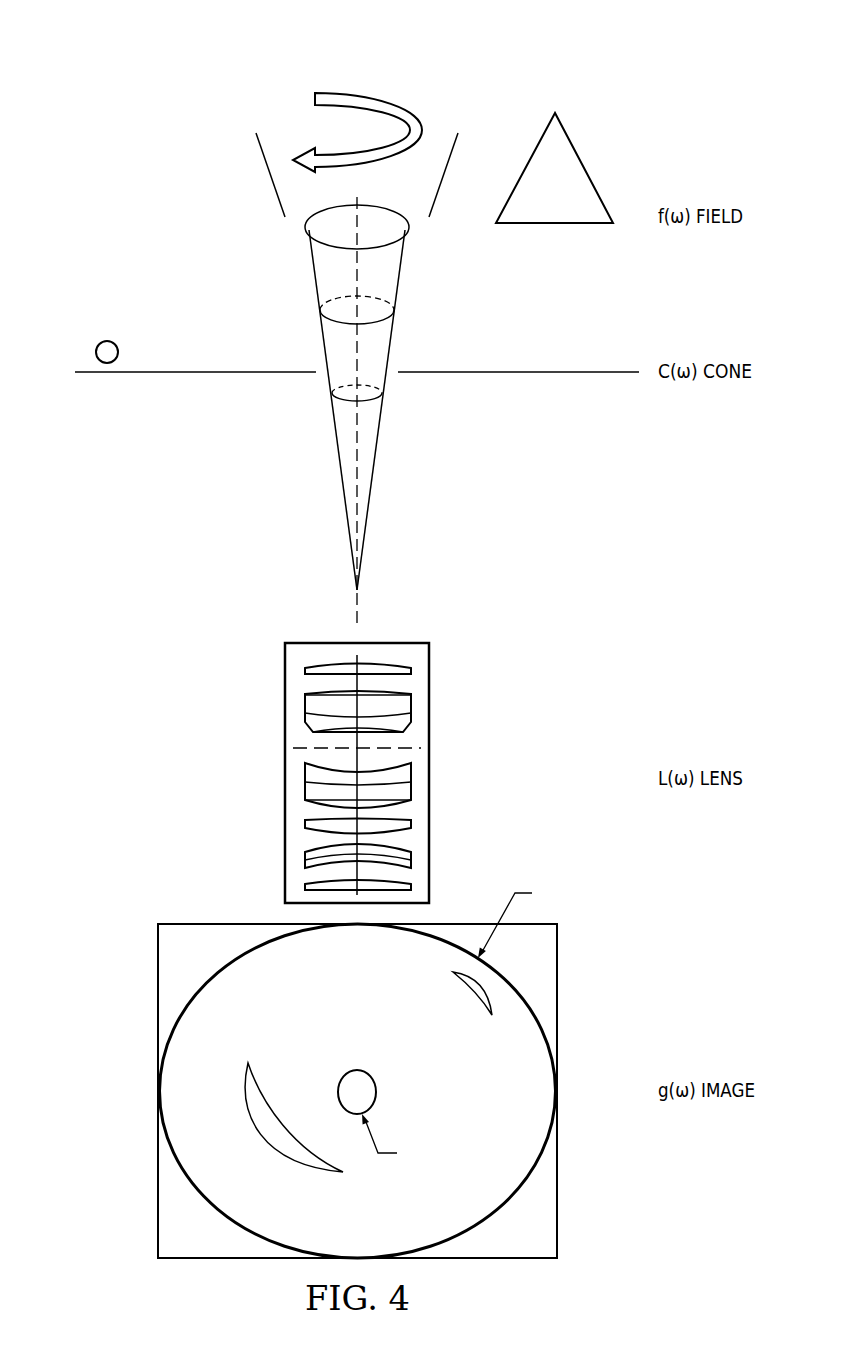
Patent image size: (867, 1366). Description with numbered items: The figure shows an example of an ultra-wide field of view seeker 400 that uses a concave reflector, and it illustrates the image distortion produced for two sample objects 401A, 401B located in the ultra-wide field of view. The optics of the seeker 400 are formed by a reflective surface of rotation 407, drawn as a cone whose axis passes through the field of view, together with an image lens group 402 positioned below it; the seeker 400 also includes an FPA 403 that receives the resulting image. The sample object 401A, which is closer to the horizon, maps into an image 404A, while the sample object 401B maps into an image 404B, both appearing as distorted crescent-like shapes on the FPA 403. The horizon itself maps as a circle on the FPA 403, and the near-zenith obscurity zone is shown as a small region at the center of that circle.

The ultra-wide field of view seeker 400 is at (170, 60).
The sample object 401A is at (96, 346).
The sample object 401B is at (588, 168).
The reflective surface of rotation 407 is at (302, 343).
The image lens group 402 is at (284, 773).
The FPA 403 is at (152, 1190).
The image 404A is at (475, 993).
The image 404B is at (287, 1166).